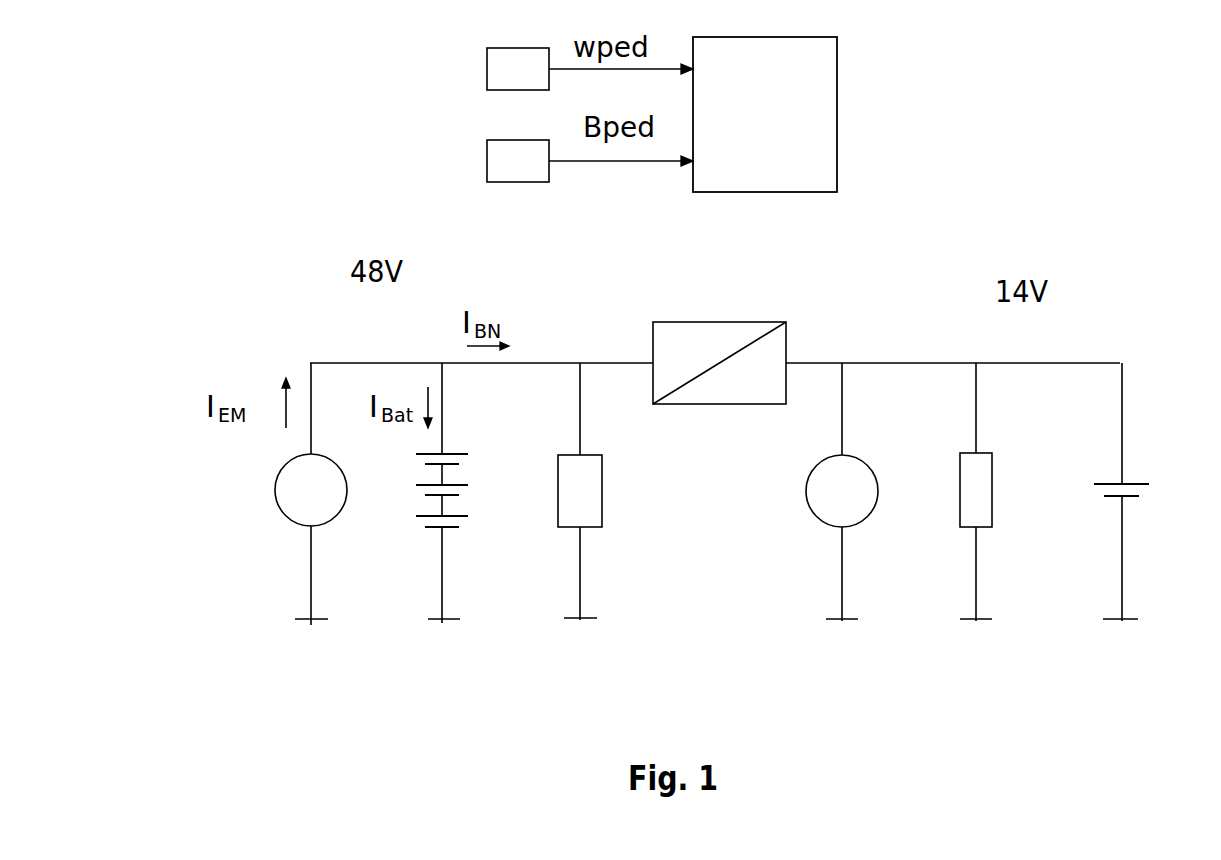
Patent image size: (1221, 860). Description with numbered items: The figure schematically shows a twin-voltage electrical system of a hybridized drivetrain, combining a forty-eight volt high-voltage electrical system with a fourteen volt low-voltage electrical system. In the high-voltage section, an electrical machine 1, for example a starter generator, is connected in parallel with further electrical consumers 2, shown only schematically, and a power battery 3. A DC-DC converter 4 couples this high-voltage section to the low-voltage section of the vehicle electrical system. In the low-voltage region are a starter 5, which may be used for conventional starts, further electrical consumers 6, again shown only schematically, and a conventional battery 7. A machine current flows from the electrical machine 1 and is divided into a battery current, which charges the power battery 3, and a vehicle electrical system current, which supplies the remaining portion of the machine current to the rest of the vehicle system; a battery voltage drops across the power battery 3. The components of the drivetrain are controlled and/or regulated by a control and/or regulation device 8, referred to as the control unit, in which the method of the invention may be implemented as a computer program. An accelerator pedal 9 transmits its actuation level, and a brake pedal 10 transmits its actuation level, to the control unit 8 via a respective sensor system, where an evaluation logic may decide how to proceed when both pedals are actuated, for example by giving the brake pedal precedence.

The electrical machine 1 is at (311, 494).
The further electrical consumers 2 is at (580, 491).
The power battery 3 is at (423, 493).
The DC-DC converter 4 is at (719, 363).
The starter 5 is at (842, 492).
The further electrical consumers 6 is at (976, 492).
The conventional battery 7 is at (1145, 492).
The control and/or regulation device 8 is at (765, 114).
The accelerator pedal 9 is at (590, 69).
The brake pedal 10 is at (590, 161).